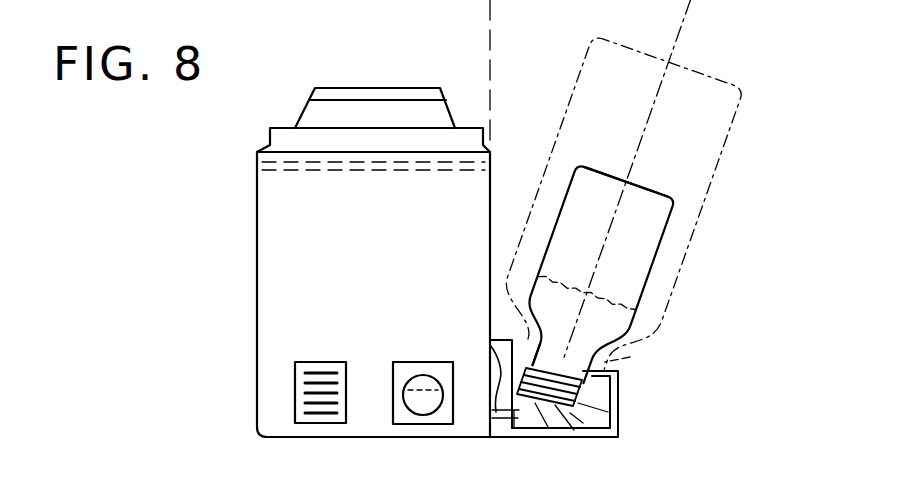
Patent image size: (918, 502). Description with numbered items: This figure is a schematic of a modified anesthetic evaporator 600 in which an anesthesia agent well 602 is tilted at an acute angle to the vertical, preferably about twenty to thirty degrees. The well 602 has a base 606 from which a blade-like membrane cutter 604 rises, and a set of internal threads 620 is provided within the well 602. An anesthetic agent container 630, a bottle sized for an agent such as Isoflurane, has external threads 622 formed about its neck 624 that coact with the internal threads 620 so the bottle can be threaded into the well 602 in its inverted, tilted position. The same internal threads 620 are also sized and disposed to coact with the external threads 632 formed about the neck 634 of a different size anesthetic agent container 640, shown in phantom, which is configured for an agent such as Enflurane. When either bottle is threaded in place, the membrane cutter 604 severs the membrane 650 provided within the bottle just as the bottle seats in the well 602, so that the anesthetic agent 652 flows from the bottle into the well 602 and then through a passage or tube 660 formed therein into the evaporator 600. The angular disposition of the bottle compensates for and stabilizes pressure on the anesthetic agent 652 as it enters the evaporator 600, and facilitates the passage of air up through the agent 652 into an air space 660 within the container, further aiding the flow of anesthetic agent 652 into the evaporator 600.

The anesthetic evaporator 600 is at (284, 64).
The anesthesia agent well 602 is at (618, 407).
The membrane cutter 604 is at (590, 431).
The base 606 is at (568, 436).
The internal threads 620 is at (528, 435).
The external threads 622 is at (618, 372).
The neck 624 is at (541, 340).
The anesthetic agent container 630 is at (642, 257).
The external threads 632 is at (616, 414).
The neck 634 is at (648, 354).
The anesthetic agent container 640 is at (728, 84).
The membrane 650 is at (583, 310).
The anesthetic agent 652 is at (568, 287).
The passage or tube 660 is at (490, 352).